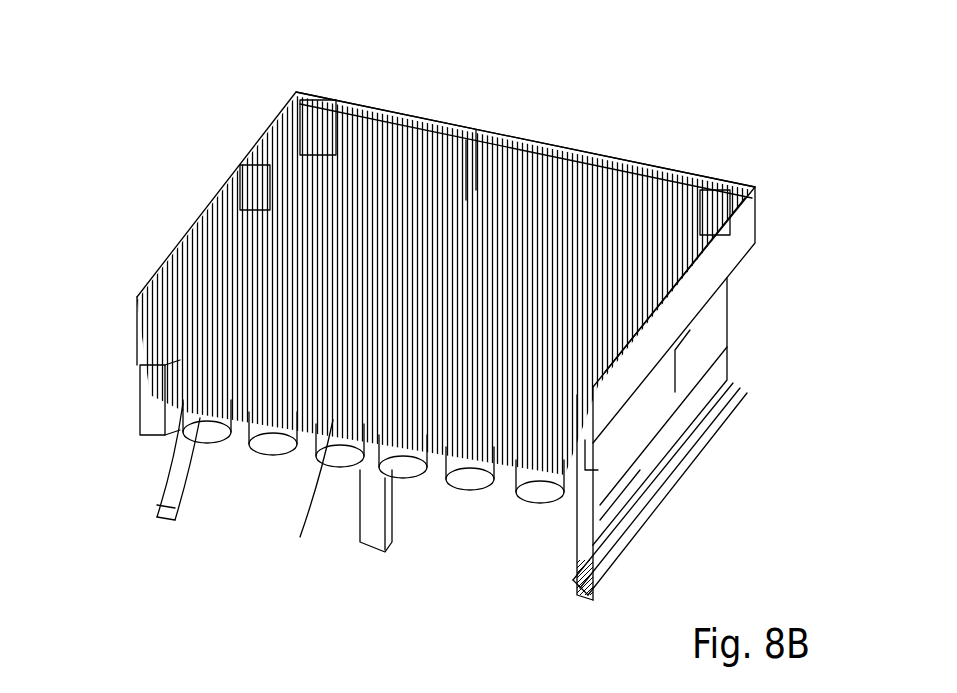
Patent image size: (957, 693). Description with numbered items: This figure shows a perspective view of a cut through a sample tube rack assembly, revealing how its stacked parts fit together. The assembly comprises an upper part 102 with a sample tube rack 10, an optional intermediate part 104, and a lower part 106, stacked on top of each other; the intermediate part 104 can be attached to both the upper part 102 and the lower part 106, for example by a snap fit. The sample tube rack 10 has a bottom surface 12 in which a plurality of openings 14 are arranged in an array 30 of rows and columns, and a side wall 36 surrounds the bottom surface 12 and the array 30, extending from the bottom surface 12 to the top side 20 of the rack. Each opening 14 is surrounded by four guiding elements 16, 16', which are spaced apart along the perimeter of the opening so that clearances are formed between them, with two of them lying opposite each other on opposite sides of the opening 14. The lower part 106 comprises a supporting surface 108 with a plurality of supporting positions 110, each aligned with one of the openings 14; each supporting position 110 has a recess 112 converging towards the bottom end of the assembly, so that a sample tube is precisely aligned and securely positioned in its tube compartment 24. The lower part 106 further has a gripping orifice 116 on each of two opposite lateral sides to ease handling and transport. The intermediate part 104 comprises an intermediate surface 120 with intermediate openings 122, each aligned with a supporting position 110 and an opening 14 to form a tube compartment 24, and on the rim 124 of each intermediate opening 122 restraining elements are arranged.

The sample tube rack 10 is at (132, 276).
The bottom surface 12 is at (145, 383).
The opening 14 is at (147, 410).
The guiding element 16 is at (213, 172).
The guiding element 16' is at (446, 142).
The top side 20 is at (205, 207).
The tube compartment 24 is at (465, 138).
The array 30 is at (475, 128).
The side wall 36 is at (657, 147).
The upper part 102 is at (775, 205).
The intermediate part 104 is at (742, 300).
The lower part 106 is at (747, 393).
The supporting surface 108 is at (680, 395).
The supporting position 110 is at (572, 540).
The recess 112 is at (512, 513).
The gripping orifice 116 is at (605, 545).
The intermediate surface 120 is at (590, 445).
The intermediate opening 122 is at (168, 485).
The rim 124 is at (300, 536).